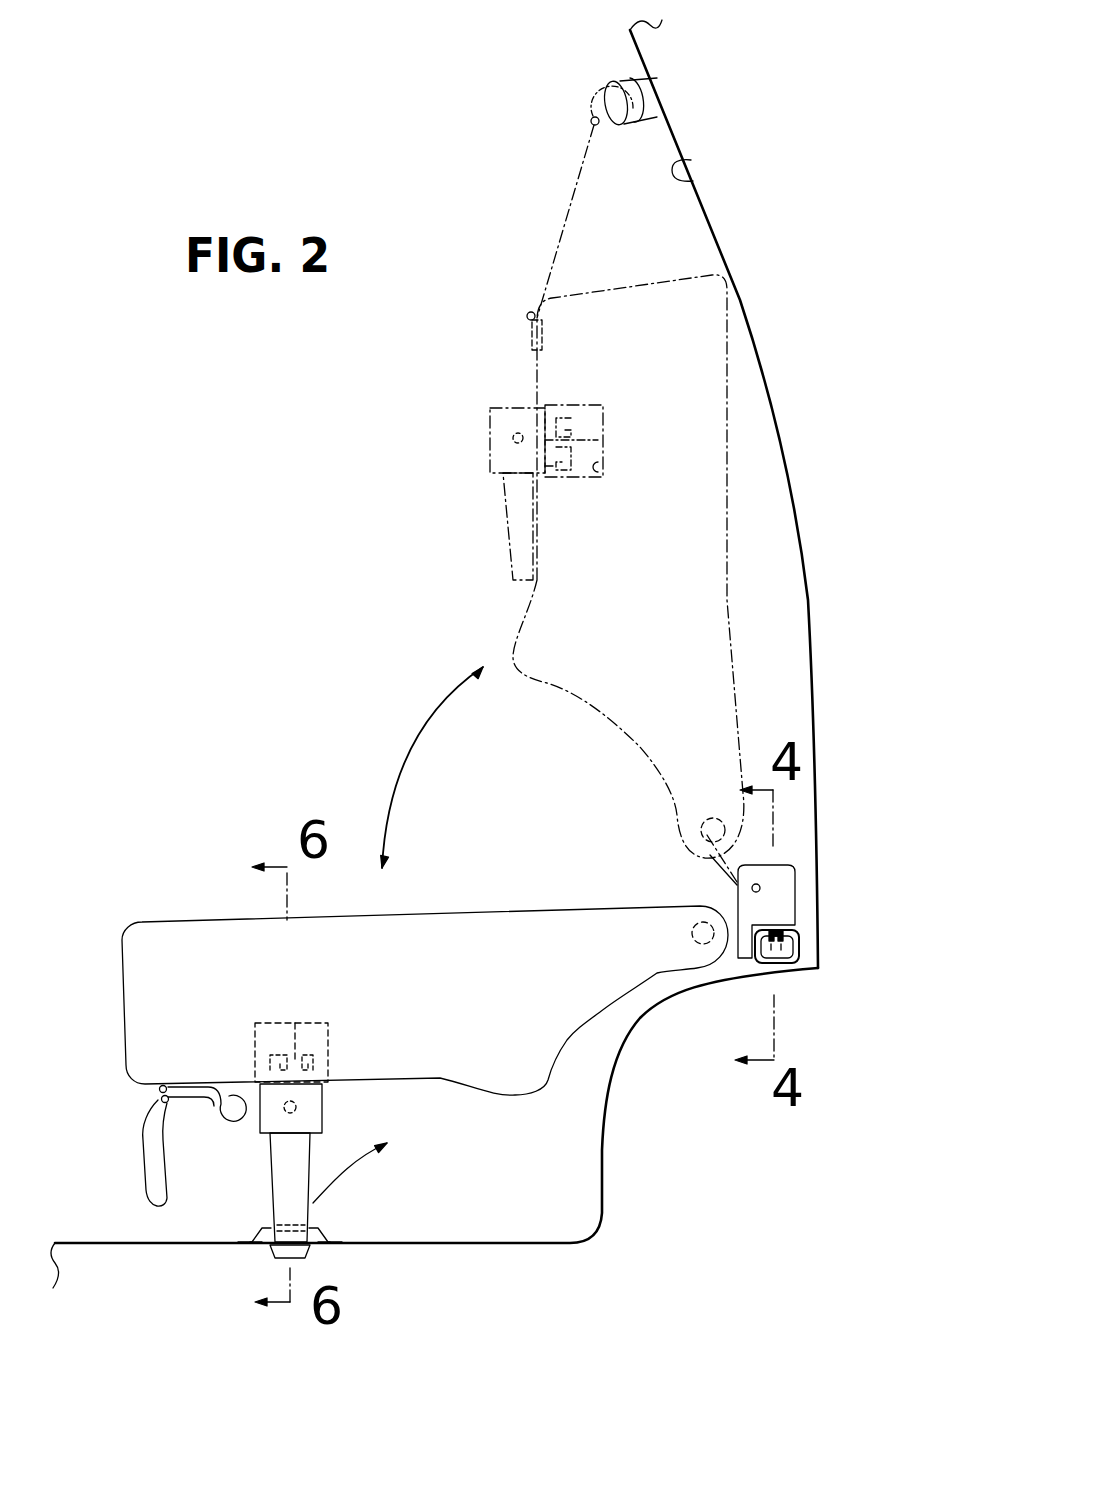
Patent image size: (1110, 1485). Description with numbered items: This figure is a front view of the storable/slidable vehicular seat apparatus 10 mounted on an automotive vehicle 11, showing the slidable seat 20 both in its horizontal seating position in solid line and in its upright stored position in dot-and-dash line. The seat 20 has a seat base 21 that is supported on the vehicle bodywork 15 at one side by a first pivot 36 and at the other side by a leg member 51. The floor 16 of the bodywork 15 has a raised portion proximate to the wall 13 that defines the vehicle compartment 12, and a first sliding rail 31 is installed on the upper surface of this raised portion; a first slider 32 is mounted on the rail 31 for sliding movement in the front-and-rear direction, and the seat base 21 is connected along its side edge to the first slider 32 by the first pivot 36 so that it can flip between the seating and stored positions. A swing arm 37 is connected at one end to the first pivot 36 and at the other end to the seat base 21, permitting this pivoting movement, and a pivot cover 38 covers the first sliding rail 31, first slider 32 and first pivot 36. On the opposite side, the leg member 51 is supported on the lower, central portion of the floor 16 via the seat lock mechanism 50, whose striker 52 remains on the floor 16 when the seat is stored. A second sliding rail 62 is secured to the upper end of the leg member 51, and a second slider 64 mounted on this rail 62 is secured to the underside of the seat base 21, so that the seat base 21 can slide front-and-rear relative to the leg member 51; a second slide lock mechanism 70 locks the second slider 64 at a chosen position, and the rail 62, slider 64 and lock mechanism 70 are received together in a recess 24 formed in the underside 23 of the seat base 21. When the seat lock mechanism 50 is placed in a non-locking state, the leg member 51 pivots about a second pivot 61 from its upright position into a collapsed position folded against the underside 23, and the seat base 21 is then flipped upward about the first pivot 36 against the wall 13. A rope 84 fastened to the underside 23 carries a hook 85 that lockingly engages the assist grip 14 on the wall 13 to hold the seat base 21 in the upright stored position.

The storable/slidable vehicular seat apparatus 10 is at (590, 853).
The automotive vehicle 11 is at (618, 45).
The vehicle compartment 12 is at (680, 243).
The wall 13 is at (697, 180).
The assist grip 14 is at (633, 107).
The vehicle bodywork 15 is at (616, 1209).
The floor 16 is at (473, 1239).
The slidable seat 20 is at (740, 347).
The seat base 21 is at (703, 413).
The underside 23 is at (537, 368).
The recess 24 is at (593, 470).
The first sliding rail 31 is at (799, 953).
The first slider 32 is at (785, 922).
The first pivot 36 is at (760, 889).
The swing arm 37 is at (720, 900).
The pivot cover 38 is at (777, 865).
The seat lock mechanism 50 is at (342, 1221).
The leg member 51 is at (500, 515).
The striker 52 is at (257, 1228).
The second pivot 61 is at (507, 438).
The second sliding rail 62 is at (562, 463).
The second slider 64 is at (598, 440).
The second slide lock mechanism 70 is at (583, 417).
The rope 84 is at (567, 200).
The hook 85 is at (589, 98).